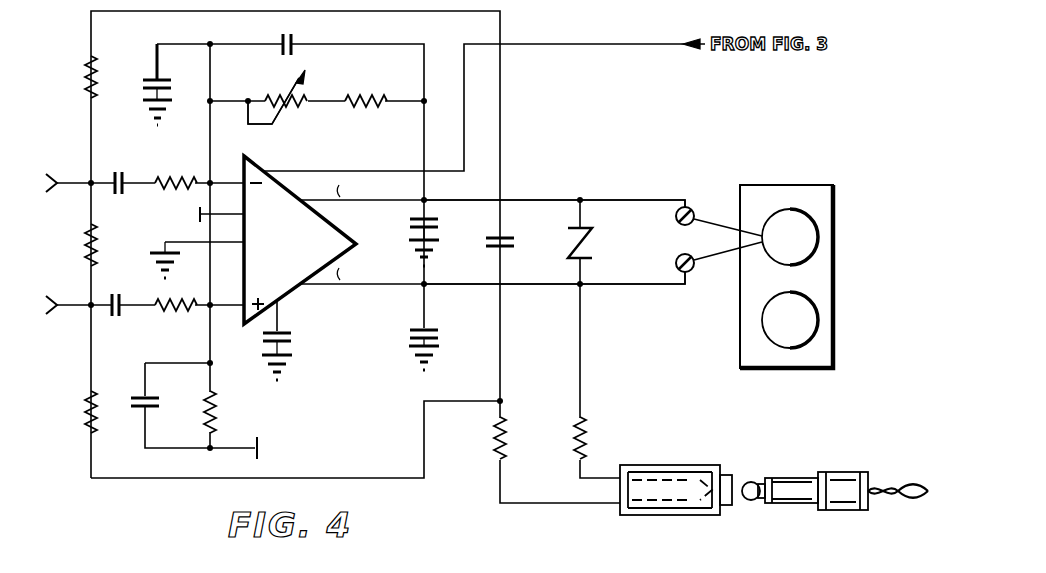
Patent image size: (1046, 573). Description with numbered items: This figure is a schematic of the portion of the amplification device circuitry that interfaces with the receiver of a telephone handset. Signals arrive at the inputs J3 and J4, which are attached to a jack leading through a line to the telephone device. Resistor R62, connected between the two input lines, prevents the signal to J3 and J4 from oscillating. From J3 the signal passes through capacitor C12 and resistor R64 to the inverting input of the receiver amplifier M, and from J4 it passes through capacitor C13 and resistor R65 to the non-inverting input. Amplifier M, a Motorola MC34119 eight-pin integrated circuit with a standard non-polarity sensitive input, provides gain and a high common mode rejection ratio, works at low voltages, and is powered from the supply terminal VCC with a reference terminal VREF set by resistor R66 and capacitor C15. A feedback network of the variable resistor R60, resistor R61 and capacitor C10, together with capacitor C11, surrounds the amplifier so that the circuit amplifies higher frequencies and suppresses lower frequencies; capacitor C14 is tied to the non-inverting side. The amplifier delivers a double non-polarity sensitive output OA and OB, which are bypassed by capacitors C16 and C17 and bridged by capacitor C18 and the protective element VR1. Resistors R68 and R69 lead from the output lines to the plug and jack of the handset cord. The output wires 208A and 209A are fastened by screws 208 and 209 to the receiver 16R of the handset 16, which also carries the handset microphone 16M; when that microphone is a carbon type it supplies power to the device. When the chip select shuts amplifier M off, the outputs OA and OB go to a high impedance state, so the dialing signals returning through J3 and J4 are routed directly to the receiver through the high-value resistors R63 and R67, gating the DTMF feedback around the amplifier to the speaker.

The resistor R60 is at (277, 116).
The resistor R61 is at (365, 113).
The resistor R62 is at (69, 245).
The resistor R63 is at (68, 77).
The resistor R64 is at (176, 170).
The resistor R65 is at (176, 318).
The resistor R66 is at (232, 412).
The resistor R67 is at (65, 412).
The resistor R68 is at (519, 438).
The resistor R69 is at (600, 438).
The capacitor C10 is at (287, 36).
The capacitor C11 is at (142, 71).
The capacitor C12 is at (121, 170).
The capacitor C13 is at (117, 315).
The capacitor C14 is at (295, 333).
The capacitor C15 is at (127, 402).
The capacitor C16 is at (443, 217).
The capacitor C17 is at (443, 329).
The capacitor C18 is at (517, 242).
The jack connection J3 is at (39, 181).
The jack connection J4 is at (39, 306).
The receiver amplifier M is at (300, 240).
The output OA is at (353, 190).
The output OB is at (353, 273).
The supply voltage terminal VCC is at (175, 214).
The reference voltage terminal VREF is at (286, 448).
The varistor VR1 is at (598, 234).
The screw 208 is at (694, 205).
The wire 208A is at (642, 199).
The screw 209 is at (684, 275).
The wire 209A is at (626, 286).
The handset 16 is at (797, 165).
The receiver 16R is at (818, 247).
The handset microphone 16M is at (818, 328).